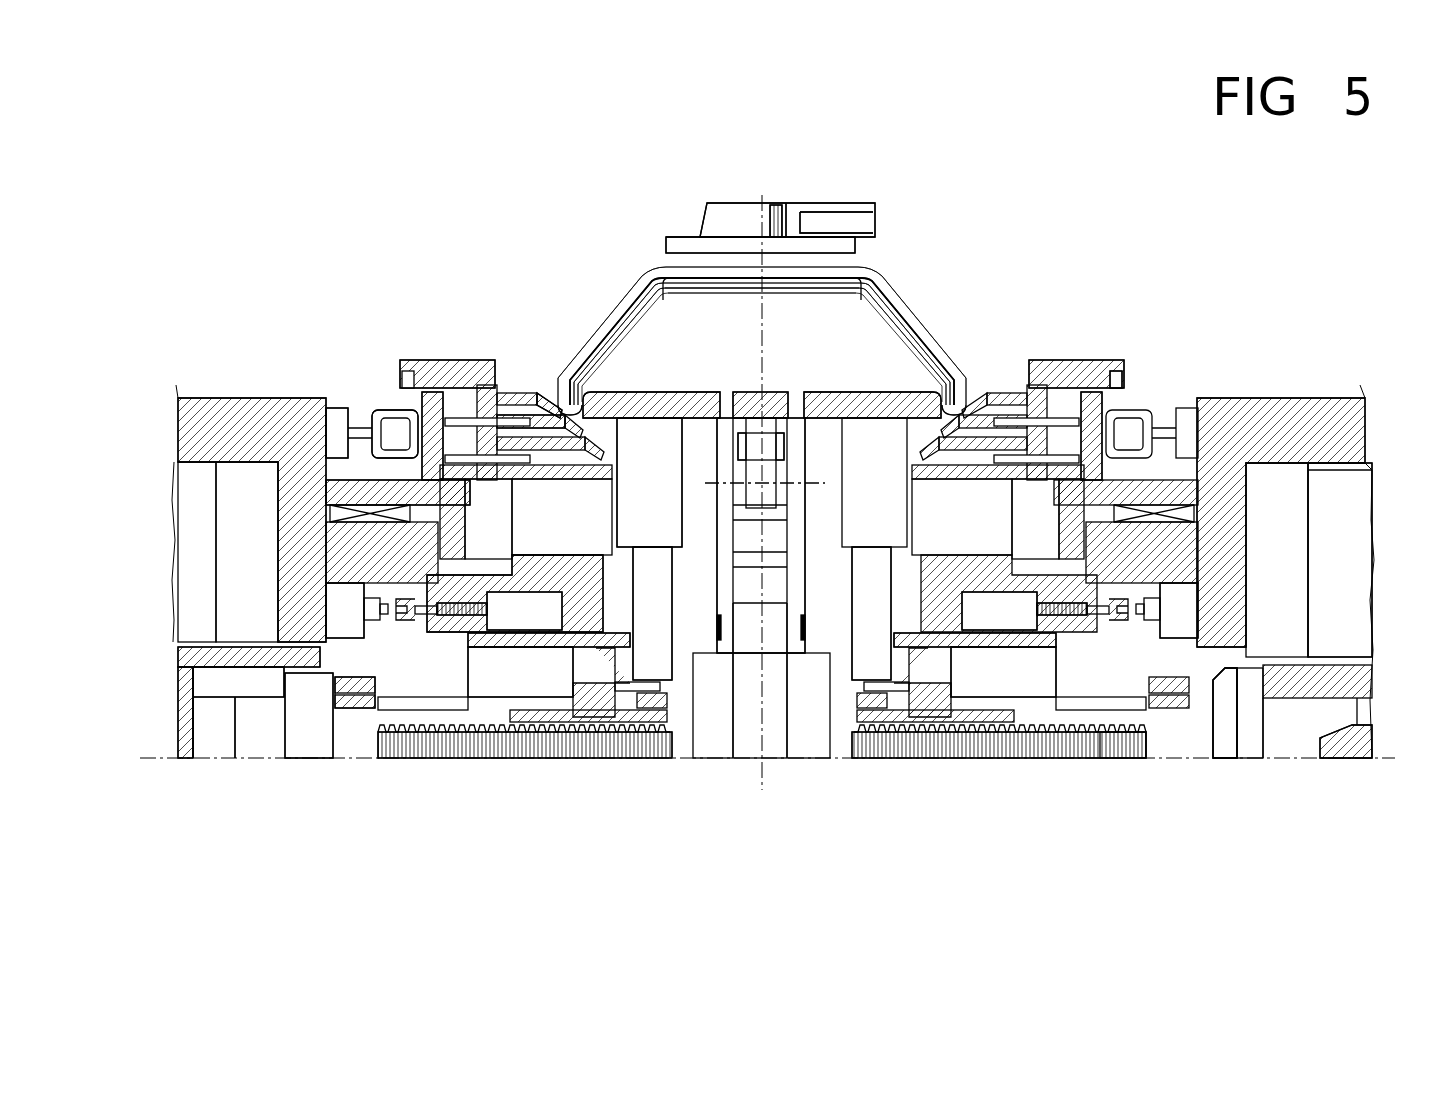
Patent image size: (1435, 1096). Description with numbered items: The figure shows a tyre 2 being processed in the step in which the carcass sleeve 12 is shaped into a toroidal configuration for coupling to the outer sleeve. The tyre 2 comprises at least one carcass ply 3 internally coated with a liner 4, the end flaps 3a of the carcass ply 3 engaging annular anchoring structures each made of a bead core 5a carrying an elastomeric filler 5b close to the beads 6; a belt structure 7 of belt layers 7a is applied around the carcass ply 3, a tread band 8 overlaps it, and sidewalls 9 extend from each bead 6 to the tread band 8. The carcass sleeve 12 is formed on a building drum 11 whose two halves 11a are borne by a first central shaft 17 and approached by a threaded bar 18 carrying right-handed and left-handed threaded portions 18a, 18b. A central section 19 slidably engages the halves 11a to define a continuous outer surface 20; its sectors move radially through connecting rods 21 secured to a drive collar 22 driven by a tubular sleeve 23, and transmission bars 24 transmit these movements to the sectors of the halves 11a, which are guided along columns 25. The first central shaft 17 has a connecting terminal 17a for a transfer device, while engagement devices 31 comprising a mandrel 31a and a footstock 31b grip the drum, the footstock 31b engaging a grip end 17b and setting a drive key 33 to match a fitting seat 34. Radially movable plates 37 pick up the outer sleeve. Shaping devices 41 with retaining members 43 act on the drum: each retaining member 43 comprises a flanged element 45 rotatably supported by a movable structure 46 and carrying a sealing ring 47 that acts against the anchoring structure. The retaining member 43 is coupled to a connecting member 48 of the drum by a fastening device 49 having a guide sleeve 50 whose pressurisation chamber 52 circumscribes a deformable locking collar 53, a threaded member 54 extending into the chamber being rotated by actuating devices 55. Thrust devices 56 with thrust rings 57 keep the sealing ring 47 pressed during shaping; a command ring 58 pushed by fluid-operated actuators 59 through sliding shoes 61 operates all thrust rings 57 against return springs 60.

The tyre 2 is at (642, 257).
The carcass ply 3 is at (920, 305).
The end flap of the carcass ply 3a is at (935, 352).
The liner 4 is at (878, 377).
The bead core 5a is at (567, 403).
The elastomeric filler 5b is at (955, 403).
The bead 6 is at (555, 405).
The belt structure 7 is at (710, 280).
The belt layer 7a is at (787, 278).
The tread band 8 is at (822, 270).
The sidewall 9 is at (607, 323).
The building drum 11 is at (832, 306).
The half of the building drum 11a is at (712, 406).
The carcass sleeve 12 is at (620, 297).
The first central shaft 17 is at (1201, 715).
The connecting terminal 17a is at (1300, 727).
The grip end of the first central shaft 17b is at (265, 735).
The threaded bar 18 is at (1162, 742).
The right-handed threaded portion 18a is at (605, 742).
The left-handed threaded portion 18b is at (910, 742).
The central section 19 is at (775, 405).
The outer surface 20 is at (657, 393).
The connecting rod 21 is at (797, 530).
The drive collar 22 is at (773, 732).
The tubular sleeve 23 is at (358, 695).
The transmission bar 24 is at (798, 453).
The column 25 is at (656, 660).
The engagement devices 31 is at (250, 790).
The mandrel 31a is at (1363, 740).
The footstock 31b is at (185, 742).
The drive key 33 is at (220, 678).
The fitting seat 34 is at (303, 672).
The plate 37 is at (683, 243).
The shaping devices 41 is at (1135, 343).
The retaining member 43 is at (1113, 348).
The flanged element 45 is at (465, 368).
The movable structure 46 is at (215, 405).
The sealing ring 47 is at (528, 402).
The connecting member 48 is at (552, 640).
The fastening device 49 is at (580, 552).
The guide sleeve 50 is at (945, 613).
The pressurisation chamber 52 is at (530, 607).
The locking collar 53 is at (517, 622).
The threaded member 54 is at (437, 612).
The actuating devices 55 is at (340, 605).
The thrust devices 56 is at (340, 385).
The thrust ring 57 is at (515, 410).
The command ring 58 is at (1091, 413).
The fluid-operated actuator 59 is at (335, 432).
The return spring 60 is at (462, 405).
The sliding shoe 61 is at (397, 430).